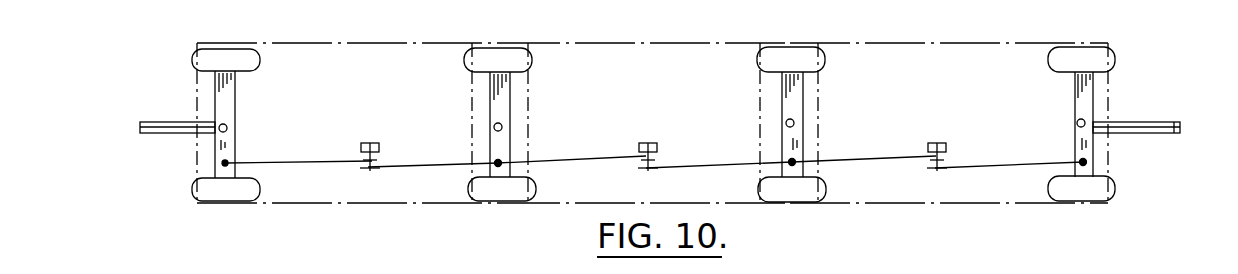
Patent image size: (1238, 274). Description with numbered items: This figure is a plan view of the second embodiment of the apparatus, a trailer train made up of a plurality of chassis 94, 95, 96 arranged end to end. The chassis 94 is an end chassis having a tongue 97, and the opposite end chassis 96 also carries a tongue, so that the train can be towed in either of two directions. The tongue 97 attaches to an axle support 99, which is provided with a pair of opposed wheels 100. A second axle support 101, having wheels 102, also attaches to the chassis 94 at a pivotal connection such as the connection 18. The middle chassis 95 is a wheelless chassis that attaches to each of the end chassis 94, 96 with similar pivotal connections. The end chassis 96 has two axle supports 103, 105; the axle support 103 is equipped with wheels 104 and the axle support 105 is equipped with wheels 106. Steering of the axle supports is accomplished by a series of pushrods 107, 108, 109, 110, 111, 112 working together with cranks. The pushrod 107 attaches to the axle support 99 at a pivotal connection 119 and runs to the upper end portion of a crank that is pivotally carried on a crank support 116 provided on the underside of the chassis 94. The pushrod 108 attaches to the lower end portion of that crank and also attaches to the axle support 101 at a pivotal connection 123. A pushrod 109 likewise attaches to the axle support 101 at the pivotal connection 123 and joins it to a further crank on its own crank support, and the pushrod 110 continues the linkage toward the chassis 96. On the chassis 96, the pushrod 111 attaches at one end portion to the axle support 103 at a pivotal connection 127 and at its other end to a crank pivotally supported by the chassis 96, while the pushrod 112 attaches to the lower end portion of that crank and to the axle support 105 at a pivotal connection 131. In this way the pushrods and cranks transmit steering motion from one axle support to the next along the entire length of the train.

The pivotal connection 18 is at (228, 128).
The end chassis 94 is at (400, 43).
The wheelless chassis 95 is at (667, 43).
The end chassis 96 is at (968, 42).
The tongue 97 is at (180, 123).
The axle support 99 is at (233, 100).
The wheels 100 is at (220, 62).
The axle support 101 is at (503, 102).
The wheels 102 is at (495, 53).
The axle support 103 is at (792, 100).
The wheels 104 is at (795, 55).
The axle support 105 is at (1085, 107).
The wheels 106 is at (1086, 55).
The pushrod 107 is at (312, 158).
The pushrod 108 is at (460, 163).
The pushrod 109 is at (600, 154).
The pushrod 110 is at (692, 165).
The pushrod 111 is at (890, 157).
The pushrod 112 is at (986, 163).
The crank support 116 is at (377, 147).
The pivotal connection 119 is at (213, 164).
The pivotal connection 123 is at (502, 162).
The pivotal connection 127 is at (795, 160).
The pivotal connection 131 is at (1086, 160).